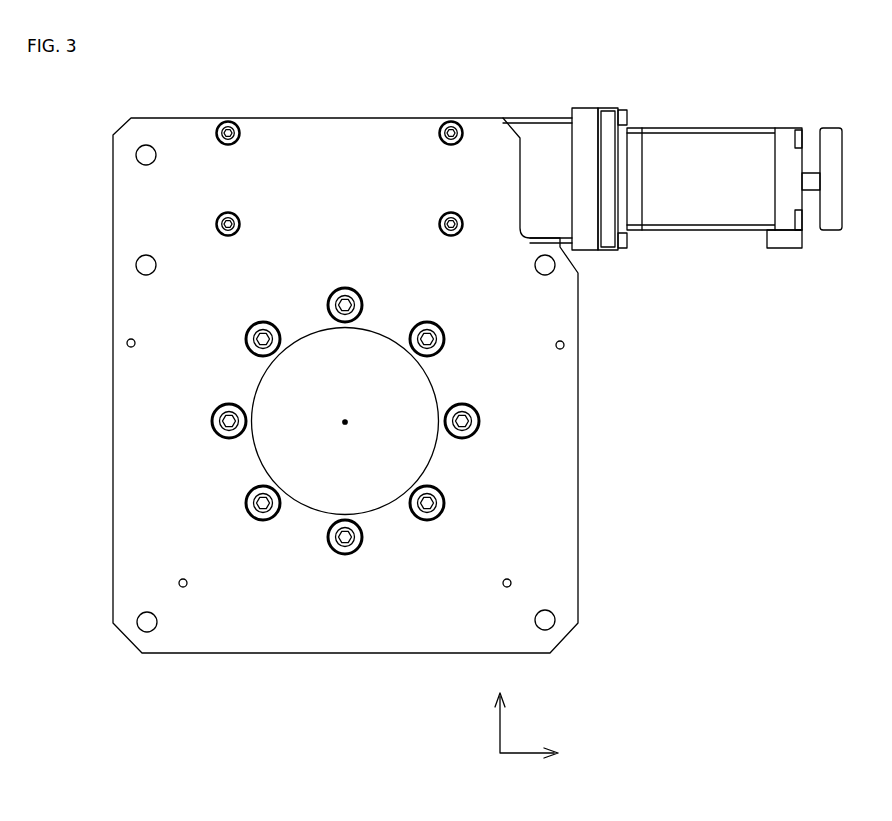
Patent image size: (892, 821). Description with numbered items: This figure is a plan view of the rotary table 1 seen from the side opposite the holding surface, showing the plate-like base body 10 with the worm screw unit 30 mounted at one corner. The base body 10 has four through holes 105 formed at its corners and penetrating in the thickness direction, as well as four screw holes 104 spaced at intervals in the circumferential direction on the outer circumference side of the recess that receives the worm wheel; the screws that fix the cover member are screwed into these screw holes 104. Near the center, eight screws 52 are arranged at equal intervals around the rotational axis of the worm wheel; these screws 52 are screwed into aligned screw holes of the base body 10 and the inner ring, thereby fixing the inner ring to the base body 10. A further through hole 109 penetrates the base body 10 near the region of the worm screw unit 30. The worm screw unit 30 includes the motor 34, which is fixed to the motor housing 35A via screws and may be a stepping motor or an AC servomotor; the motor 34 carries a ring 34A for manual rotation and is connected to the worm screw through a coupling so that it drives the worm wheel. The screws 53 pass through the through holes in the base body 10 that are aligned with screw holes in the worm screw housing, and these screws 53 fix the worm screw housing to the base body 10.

The rotary table 1 is at (624, 686).
The base body 10 is at (322, 118).
The worm screw unit 30 is at (749, 114).
The motor 34 is at (695, 148).
The ring for manual rotation 34A is at (828, 140).
The motor housing 35A is at (545, 140).
The screws 52 is at (328, 305).
The screws 53 is at (220, 216).
The screw holes 104 is at (127, 343).
The through holes 105 is at (136, 265).
The through hole 109 is at (136, 155).